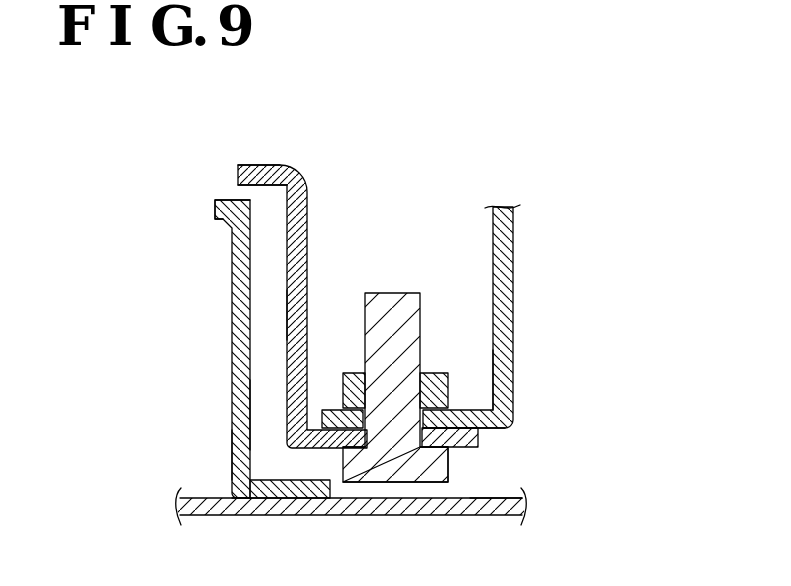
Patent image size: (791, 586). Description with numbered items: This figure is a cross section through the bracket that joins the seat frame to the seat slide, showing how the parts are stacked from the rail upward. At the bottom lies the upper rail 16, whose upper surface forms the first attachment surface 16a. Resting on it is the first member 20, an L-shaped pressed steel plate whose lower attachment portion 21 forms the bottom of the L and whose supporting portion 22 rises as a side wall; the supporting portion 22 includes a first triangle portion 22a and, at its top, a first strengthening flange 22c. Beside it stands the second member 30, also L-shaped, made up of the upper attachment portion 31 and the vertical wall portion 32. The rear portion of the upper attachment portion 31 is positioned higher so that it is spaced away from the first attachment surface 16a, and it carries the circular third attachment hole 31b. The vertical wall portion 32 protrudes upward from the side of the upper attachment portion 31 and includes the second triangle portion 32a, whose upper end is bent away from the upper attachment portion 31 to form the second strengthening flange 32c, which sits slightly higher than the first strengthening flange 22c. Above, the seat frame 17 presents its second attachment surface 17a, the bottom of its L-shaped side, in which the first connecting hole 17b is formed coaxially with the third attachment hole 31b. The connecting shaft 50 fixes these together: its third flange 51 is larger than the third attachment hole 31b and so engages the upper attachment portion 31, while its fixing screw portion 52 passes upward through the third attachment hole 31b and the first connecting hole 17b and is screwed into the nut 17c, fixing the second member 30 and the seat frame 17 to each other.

The upper rail 16 is at (488, 507).
The first attachment surface 16a is at (500, 497).
The seat frame 17 is at (513, 238).
The second attachment surface 17a is at (513, 437).
The first connecting hole 17b is at (448, 393).
The nut 17c is at (437, 373).
The first member 20 is at (232, 450).
The lower attachment portion 21 is at (323, 497).
The supporting portion 22 is at (246, 385).
The first triangle portion 22a is at (243, 422).
The first strengthening flange 22c is at (218, 215).
The second member 30 is at (244, 496).
The upper attachment portion 31 is at (466, 448).
The third attachment hole 31b is at (397, 460).
The vertical wall portion 32 is at (290, 268).
The second triangle portion 32a is at (283, 310).
The second strengthening flange 32c is at (238, 181).
The connecting shaft 50 is at (328, 205).
The third flange 51 is at (330, 408).
The fixing screw portion 52 is at (400, 312).